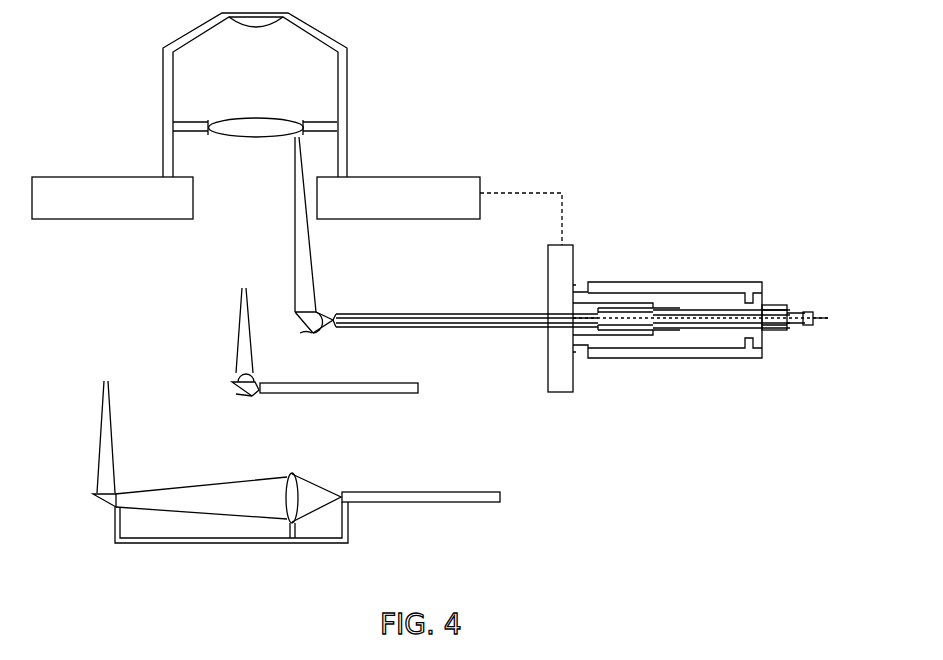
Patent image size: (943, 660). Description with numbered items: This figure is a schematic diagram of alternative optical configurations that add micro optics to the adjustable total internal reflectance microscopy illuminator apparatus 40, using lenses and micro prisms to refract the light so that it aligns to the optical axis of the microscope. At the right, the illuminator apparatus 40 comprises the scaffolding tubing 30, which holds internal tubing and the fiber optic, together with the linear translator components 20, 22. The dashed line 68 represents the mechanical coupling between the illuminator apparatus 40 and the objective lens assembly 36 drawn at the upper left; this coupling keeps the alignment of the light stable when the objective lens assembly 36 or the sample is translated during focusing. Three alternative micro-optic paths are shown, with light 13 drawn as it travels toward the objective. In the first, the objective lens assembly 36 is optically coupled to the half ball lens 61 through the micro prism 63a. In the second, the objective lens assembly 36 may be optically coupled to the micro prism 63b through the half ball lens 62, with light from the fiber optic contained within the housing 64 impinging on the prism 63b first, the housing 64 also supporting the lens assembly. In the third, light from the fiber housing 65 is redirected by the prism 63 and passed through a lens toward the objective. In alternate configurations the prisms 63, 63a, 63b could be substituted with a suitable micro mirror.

The objective lens assembly 36 is at (362, 50).
The dashed line 68 is at (546, 191).
The light beam 13 is at (295, 223).
The half ball lens 61 is at (319, 316).
The scaffolding tubing 30 is at (371, 313).
The micro prism 63a is at (302, 333).
The half ball lens 62 is at (253, 372).
The micro prism 63b is at (241, 396).
The housing 64 is at (385, 394).
The prism 63 is at (105, 503).
The optical fiber 65 is at (450, 503).
The linear translator component 22 is at (579, 292).
The linear translator component 20 is at (672, 282).
The adjustable TIRFM illuminator apparatus 40 is at (661, 435).